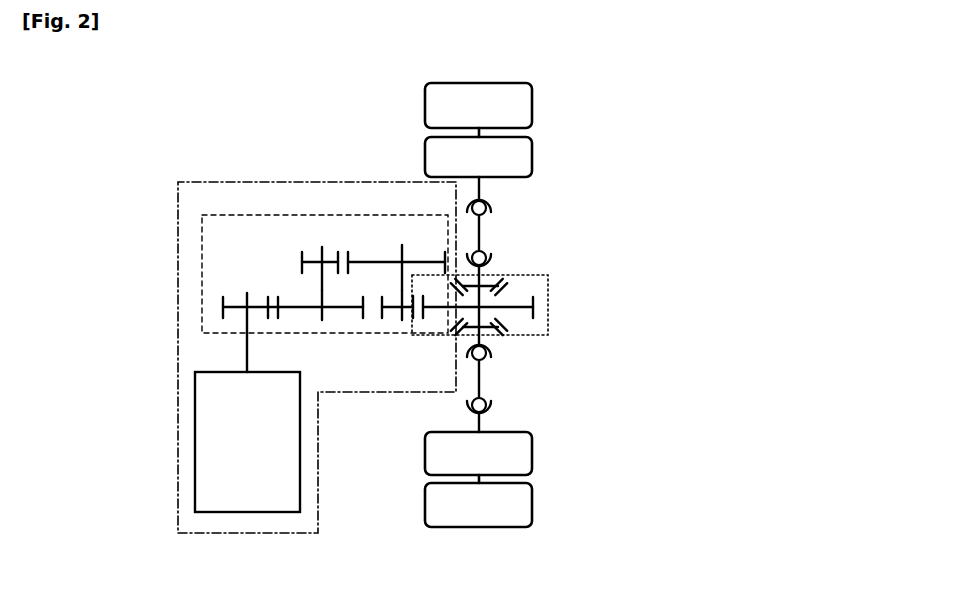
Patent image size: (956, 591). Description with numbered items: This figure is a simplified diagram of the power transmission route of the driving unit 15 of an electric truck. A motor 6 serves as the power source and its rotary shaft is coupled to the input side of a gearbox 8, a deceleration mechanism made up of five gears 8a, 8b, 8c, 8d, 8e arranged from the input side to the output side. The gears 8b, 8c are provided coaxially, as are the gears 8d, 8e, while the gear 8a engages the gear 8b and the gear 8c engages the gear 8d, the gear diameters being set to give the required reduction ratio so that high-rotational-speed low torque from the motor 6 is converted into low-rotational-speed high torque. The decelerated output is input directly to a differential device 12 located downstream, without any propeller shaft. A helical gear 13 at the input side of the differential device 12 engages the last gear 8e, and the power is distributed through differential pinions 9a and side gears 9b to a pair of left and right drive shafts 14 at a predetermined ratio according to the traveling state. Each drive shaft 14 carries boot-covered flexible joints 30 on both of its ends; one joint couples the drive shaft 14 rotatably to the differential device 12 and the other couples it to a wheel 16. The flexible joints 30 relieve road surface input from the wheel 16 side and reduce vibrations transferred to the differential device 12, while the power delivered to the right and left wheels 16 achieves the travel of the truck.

The motor 6 is at (195, 445).
The gearbox 8 is at (213, 214).
The gear 8a is at (233, 305).
The gear 8b is at (326, 320).
The gear 8c is at (320, 247).
The gear 8d is at (372, 262).
The gear 8e is at (392, 320).
The differential pinions 9a is at (500, 318).
The side gears 9b is at (497, 330).
The differential device 12 is at (556, 300).
The helical gear 13 is at (433, 322).
The drive shaft 14 is at (482, 233).
The driving unit 15 is at (262, 182).
The wheel 16 is at (479, 83).
The flexible joints 30 is at (488, 210).